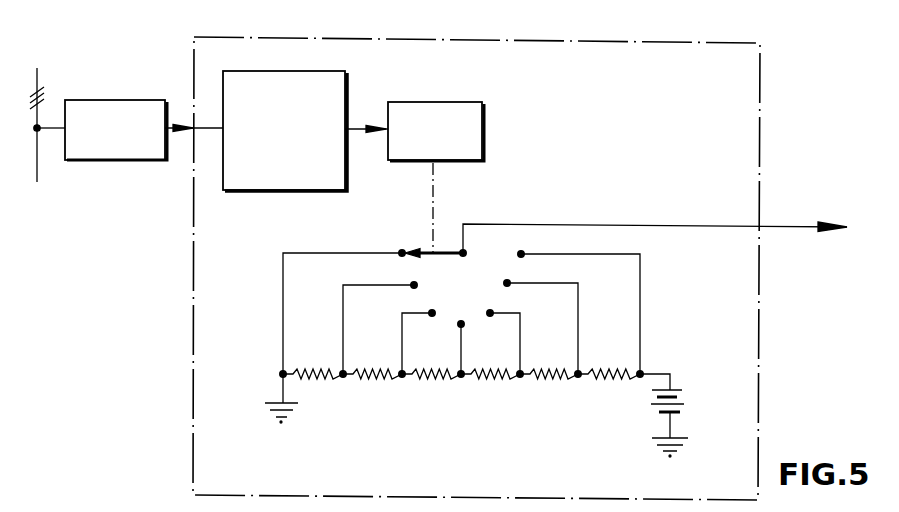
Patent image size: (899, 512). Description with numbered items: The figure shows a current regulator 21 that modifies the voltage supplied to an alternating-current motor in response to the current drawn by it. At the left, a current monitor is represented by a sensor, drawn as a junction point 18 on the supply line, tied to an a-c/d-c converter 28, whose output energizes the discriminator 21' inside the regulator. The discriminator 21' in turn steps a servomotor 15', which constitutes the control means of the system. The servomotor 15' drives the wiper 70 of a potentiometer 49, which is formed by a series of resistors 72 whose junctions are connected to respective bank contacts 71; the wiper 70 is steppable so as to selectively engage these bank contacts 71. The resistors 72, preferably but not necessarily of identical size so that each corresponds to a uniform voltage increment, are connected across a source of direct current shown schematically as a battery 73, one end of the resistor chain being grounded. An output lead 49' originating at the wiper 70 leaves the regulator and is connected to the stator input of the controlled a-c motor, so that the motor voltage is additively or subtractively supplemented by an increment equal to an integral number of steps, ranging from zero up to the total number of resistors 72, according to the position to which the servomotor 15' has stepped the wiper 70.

The junction point 18 is at (40, 132).
The a-c/d-c converter 28 is at (120, 160).
The current regulator 21 is at (507, 268).
The discriminator 21' is at (284, 156).
The servomotor 15' is at (470, 131).
The potentiometer 49 is at (402, 207).
The wiper 70 is at (445, 250).
The bank contacts 71 is at (490, 311).
The resistors 72 is at (485, 379).
The battery 73 is at (655, 393).
The output lead 49' is at (655, 251).